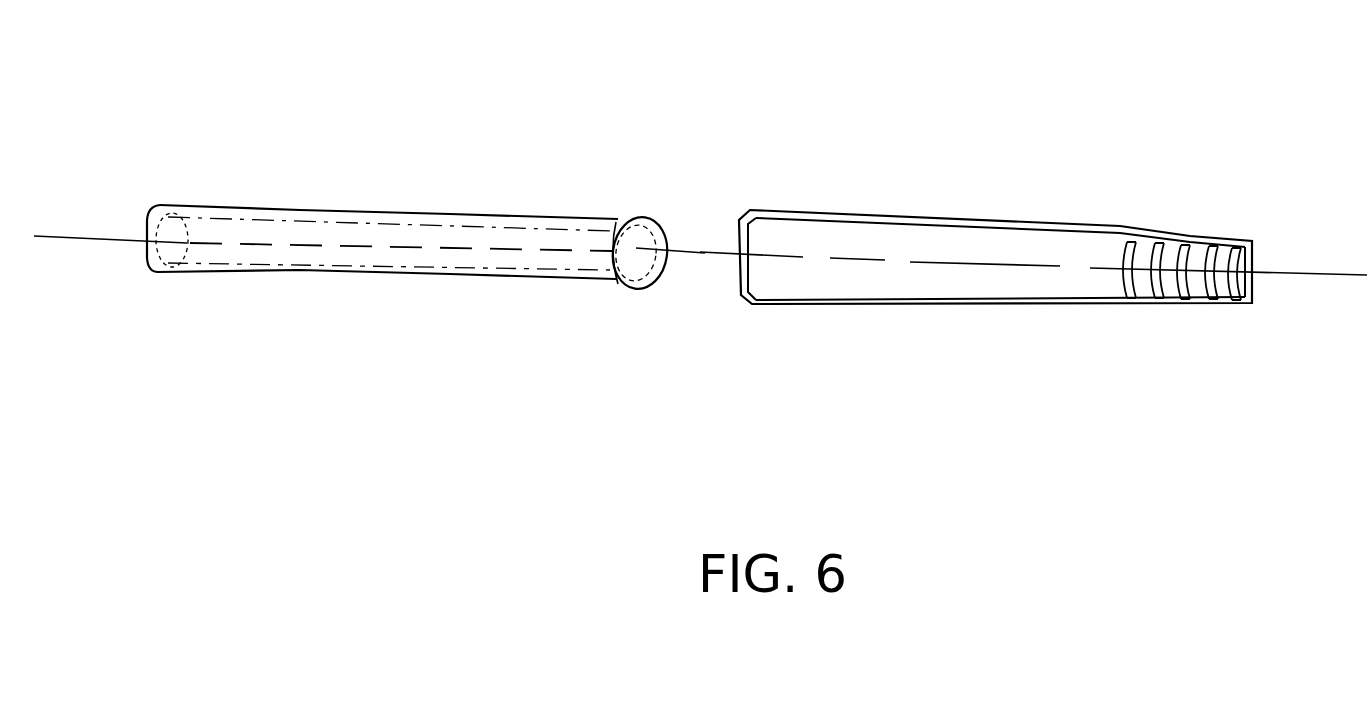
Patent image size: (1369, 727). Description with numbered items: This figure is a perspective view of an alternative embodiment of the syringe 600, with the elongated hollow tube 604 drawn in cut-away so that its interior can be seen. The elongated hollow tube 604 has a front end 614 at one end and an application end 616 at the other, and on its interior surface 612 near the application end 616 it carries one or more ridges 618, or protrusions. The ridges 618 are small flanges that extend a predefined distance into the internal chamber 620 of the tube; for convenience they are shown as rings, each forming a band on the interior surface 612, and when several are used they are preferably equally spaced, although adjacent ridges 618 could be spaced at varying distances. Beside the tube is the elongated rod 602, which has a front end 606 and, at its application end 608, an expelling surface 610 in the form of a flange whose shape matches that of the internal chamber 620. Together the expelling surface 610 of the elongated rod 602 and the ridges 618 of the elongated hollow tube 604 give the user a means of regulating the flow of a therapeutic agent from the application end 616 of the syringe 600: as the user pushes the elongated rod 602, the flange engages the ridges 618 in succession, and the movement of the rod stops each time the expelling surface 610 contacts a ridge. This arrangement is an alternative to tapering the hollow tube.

The syringe 600 is at (1272, 72).
The elongated rod 602 is at (420, 217).
The elongated hollow tube 604 is at (905, 215).
The front end 606 is at (150, 263).
The application end 608 is at (652, 212).
The expelling surface 610 is at (652, 285).
The interior surface 612 is at (1007, 283).
The front end 614 is at (746, 216).
The application end 616 is at (1252, 263).
The ridges 618 is at (1225, 306).
The internal chamber 620 is at (1043, 250).